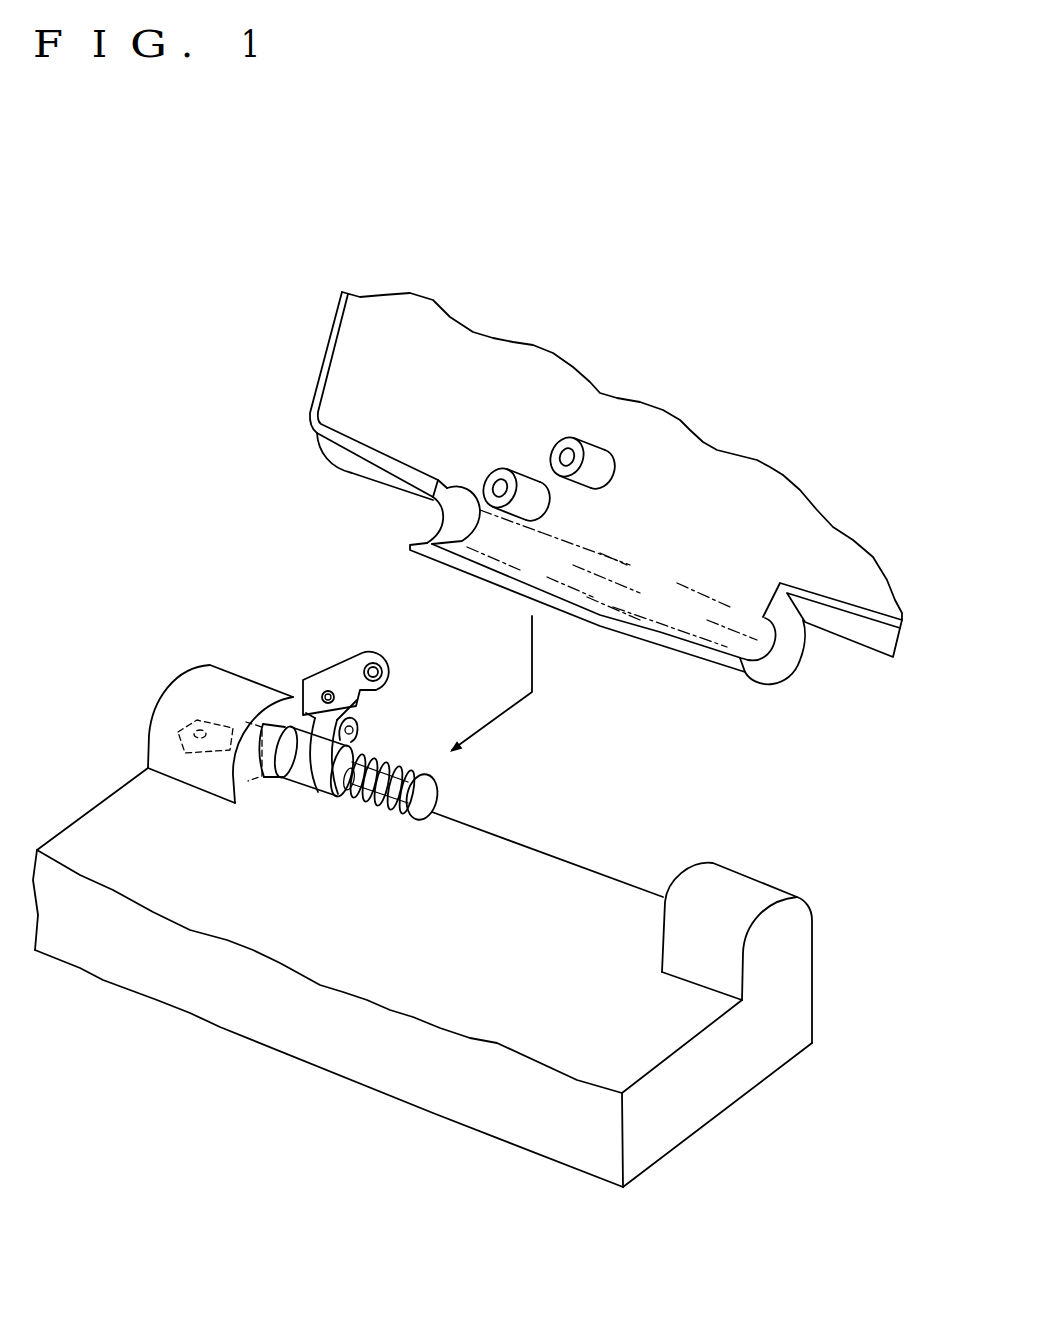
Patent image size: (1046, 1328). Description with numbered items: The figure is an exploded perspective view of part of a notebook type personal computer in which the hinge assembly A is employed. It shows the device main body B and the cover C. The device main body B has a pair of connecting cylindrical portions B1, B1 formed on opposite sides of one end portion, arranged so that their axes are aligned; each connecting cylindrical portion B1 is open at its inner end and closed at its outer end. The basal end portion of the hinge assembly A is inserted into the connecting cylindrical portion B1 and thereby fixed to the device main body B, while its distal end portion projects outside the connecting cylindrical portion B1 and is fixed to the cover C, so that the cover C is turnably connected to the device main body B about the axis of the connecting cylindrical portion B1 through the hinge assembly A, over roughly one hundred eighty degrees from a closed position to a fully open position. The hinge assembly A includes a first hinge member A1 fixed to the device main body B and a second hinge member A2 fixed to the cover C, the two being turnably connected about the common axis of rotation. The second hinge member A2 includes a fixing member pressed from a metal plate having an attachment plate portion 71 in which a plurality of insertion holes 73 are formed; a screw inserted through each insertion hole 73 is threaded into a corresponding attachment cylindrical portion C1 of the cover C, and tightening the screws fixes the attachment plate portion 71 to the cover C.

The hinge assembly A is at (261, 798).
The first hinge member A1 is at (210, 887).
The second hinge member A2 is at (351, 640).
The attachment plate portion 71 is at (327, 677).
The insertion holes 73 is at (326, 695).
The device main body B is at (433, 983).
The connecting cylindrical portions B1 is at (203, 684).
The cover C is at (318, 356).
The attachment cylindrical portions C1 is at (520, 468).